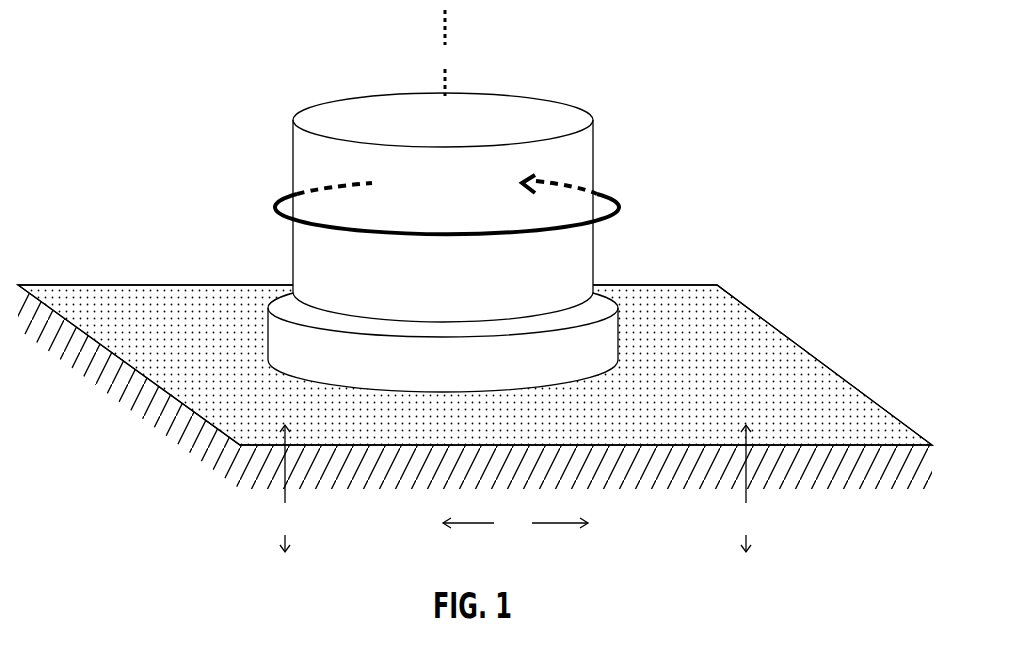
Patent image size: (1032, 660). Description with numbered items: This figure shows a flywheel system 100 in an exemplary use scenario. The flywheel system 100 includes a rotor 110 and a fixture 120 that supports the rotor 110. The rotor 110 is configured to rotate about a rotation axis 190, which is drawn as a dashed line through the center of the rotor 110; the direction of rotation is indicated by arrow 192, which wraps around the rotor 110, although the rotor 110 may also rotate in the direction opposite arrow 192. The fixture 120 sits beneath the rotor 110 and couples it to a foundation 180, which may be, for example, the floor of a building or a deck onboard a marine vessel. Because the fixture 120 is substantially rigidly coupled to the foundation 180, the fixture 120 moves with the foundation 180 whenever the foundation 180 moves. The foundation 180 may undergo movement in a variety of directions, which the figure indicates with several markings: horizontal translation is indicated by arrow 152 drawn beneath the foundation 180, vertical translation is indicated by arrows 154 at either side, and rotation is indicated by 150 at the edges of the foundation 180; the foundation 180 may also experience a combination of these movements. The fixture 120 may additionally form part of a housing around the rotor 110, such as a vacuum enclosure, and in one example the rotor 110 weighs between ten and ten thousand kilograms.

The flywheel system 100 is at (230, 53).
The rotor 110 is at (347, 278).
The fixture 120 is at (335, 364).
The rotation 150 is at (475, 387).
The arrow 152 is at (515, 522).
The arrows 154 is at (517, 488).
The foundation 180 is at (415, 478).
The rotation axis 190 is at (445, 53).
The arrow 192 is at (447, 209).